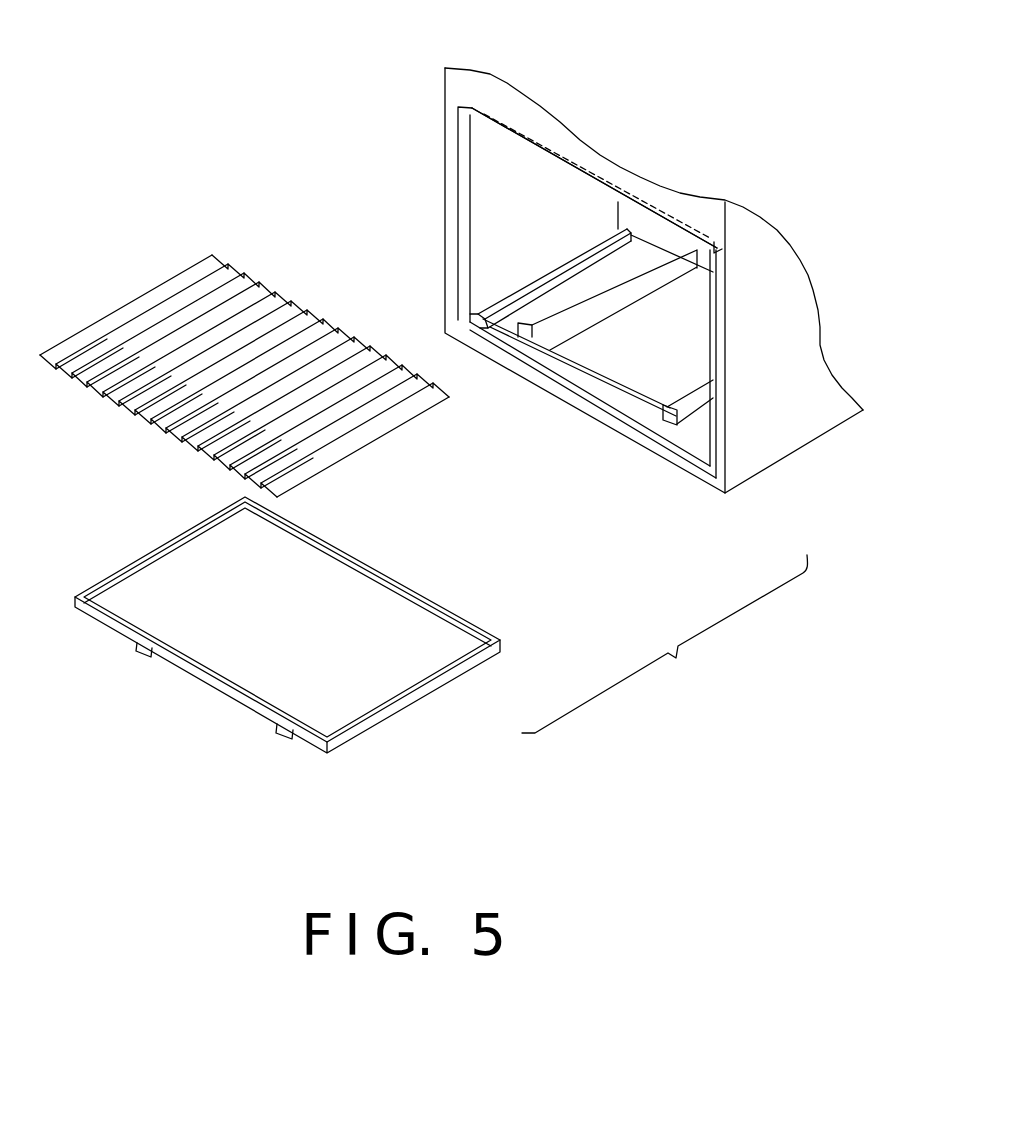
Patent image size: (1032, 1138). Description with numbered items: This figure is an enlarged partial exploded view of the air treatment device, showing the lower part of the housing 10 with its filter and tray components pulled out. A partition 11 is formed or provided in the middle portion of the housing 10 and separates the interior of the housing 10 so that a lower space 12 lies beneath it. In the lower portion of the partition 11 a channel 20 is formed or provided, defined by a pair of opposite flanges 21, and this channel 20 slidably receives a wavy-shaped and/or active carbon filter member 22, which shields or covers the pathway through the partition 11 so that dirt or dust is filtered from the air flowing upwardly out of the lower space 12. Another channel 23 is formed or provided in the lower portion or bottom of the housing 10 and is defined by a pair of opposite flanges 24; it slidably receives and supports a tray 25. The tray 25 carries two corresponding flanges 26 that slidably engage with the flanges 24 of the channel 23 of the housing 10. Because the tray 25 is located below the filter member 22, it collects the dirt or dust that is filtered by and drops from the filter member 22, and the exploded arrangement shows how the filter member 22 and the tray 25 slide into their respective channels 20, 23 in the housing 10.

The housing 10 is at (795, 423).
The partition 11 is at (533, 145).
The lower space 12 is at (493, 223).
The channel 20 is at (465, 104).
The flanges 21 is at (482, 115).
The filter member 22 is at (147, 413).
The channel 23 is at (517, 325).
The flanges 24 is at (670, 406).
The tray 25 is at (223, 657).
The flanges 26 is at (280, 735).